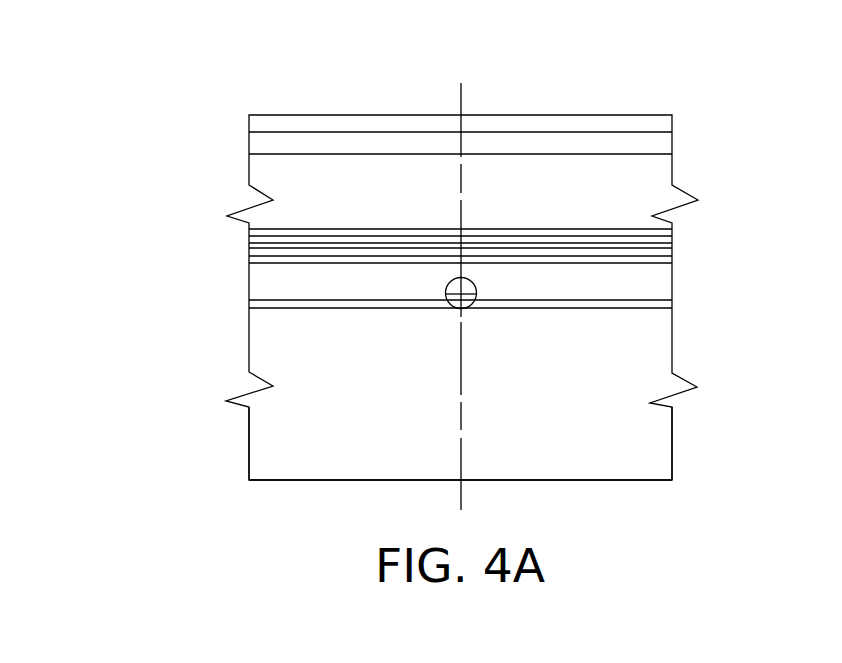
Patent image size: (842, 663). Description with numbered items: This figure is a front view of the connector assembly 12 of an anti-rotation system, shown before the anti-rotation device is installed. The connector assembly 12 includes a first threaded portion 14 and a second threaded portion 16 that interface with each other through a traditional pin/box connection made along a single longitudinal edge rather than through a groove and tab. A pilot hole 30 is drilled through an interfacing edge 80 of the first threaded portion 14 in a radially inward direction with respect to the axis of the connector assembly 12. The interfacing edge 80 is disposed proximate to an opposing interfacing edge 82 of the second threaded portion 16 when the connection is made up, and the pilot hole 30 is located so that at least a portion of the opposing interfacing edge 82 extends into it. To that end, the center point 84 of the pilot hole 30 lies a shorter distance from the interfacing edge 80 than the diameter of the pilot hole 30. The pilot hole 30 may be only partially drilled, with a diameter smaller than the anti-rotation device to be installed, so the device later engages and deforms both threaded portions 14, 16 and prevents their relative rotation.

The connector assembly 12 is at (125, 52).
The first threaded portion 14 is at (639, 187).
The second threaded portion 16 is at (640, 415).
The pilot hole 30 is at (467, 279).
The interfacing edge 80 is at (567, 308).
The opposing interfacing edge 82 is at (359, 300).
The center point 84 is at (461, 294).